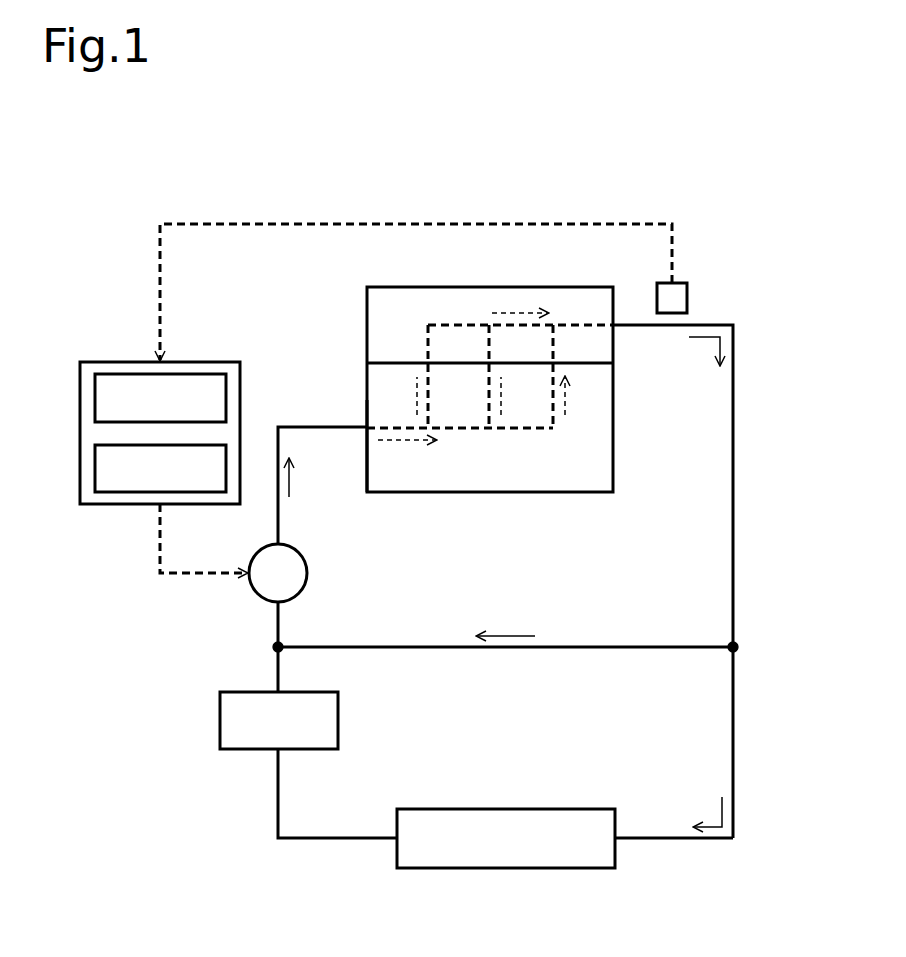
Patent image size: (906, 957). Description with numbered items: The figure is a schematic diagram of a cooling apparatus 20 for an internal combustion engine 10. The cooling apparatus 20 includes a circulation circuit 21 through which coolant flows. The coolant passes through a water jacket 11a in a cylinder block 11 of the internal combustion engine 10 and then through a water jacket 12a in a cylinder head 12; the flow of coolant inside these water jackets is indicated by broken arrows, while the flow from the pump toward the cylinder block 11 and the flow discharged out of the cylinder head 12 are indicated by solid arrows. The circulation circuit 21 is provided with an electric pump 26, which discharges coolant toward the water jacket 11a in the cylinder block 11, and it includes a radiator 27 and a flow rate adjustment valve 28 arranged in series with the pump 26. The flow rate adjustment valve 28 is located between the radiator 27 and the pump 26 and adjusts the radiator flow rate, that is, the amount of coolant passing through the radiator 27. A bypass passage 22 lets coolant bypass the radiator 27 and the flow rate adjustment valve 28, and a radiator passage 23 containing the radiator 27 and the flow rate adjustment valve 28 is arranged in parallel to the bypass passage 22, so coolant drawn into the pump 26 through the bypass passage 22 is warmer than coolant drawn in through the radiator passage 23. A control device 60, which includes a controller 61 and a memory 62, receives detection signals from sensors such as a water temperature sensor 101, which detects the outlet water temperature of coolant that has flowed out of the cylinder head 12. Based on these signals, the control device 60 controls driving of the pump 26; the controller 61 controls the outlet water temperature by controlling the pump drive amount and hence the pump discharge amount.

The internal combustion engine 10 is at (332, 283).
The cylinder block 11 is at (367, 390).
The water jacket 11a is at (470, 431).
The cylinder head 12 is at (367, 322).
The water jacket 12a is at (458, 325).
The cooling apparatus 20 is at (257, 855).
The circulation circuit 21 is at (733, 483).
The bypass passage 22 is at (655, 646).
The radiator passage 23 is at (658, 840).
The electric pump 26 is at (307, 573).
The radiator 27 is at (572, 810).
The flow rate adjustment valve 28 is at (338, 720).
The control device 60 is at (213, 362).
The controller 61 is at (95, 397).
The memory 62 is at (95, 467).
The water temperature sensor 101 is at (687, 297).